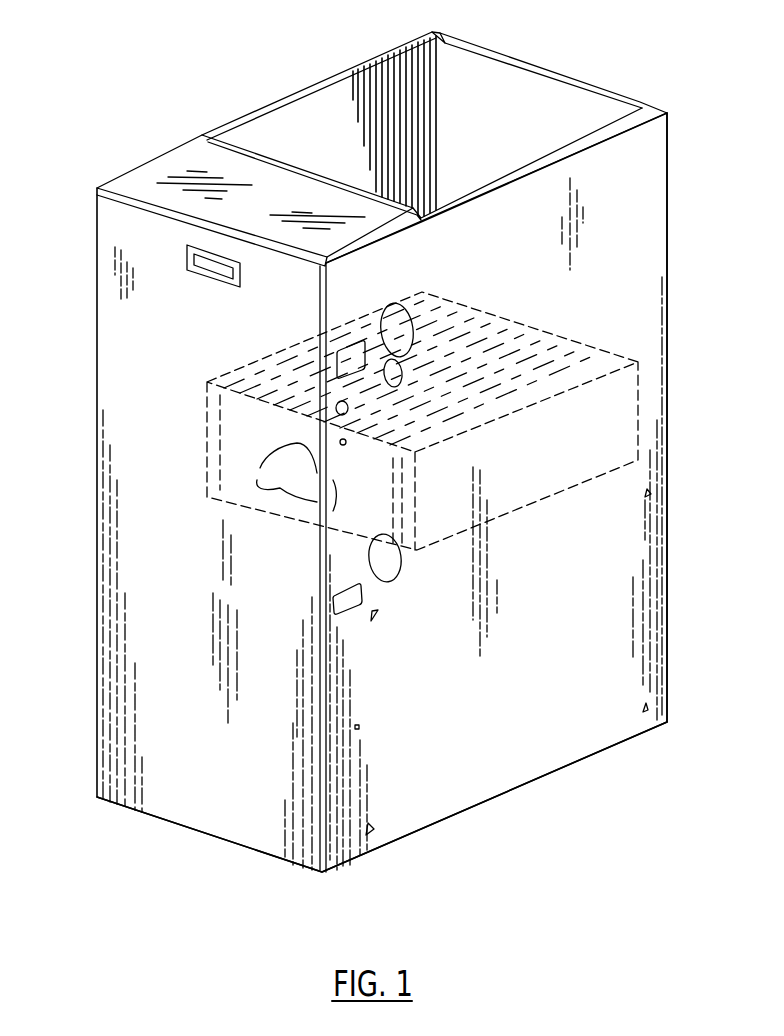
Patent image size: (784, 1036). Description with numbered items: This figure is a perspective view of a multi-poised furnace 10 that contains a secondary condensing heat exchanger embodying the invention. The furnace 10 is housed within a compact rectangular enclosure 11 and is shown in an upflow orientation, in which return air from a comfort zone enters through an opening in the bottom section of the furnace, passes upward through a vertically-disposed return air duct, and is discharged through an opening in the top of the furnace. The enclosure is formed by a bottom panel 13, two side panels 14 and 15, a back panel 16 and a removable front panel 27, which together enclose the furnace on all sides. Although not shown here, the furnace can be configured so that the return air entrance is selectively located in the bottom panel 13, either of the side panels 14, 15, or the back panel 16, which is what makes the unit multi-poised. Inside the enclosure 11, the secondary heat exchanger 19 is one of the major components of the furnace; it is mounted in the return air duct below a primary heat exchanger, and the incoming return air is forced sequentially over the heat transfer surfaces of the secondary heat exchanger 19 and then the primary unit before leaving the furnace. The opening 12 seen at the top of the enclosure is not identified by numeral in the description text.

The multi-poised furnace 10 is at (632, 84).
The compact rectangular enclosure 11 is at (692, 565).
The opening 12 is at (288, 120).
The bottom panel 13 is at (548, 771).
The side panel 14 is at (630, 257).
The side panel 15 is at (167, 158).
The back panel 16 is at (527, 63).
The secondary heat exchanger 19 is at (655, 431).
The removable front panel 27 is at (130, 507).